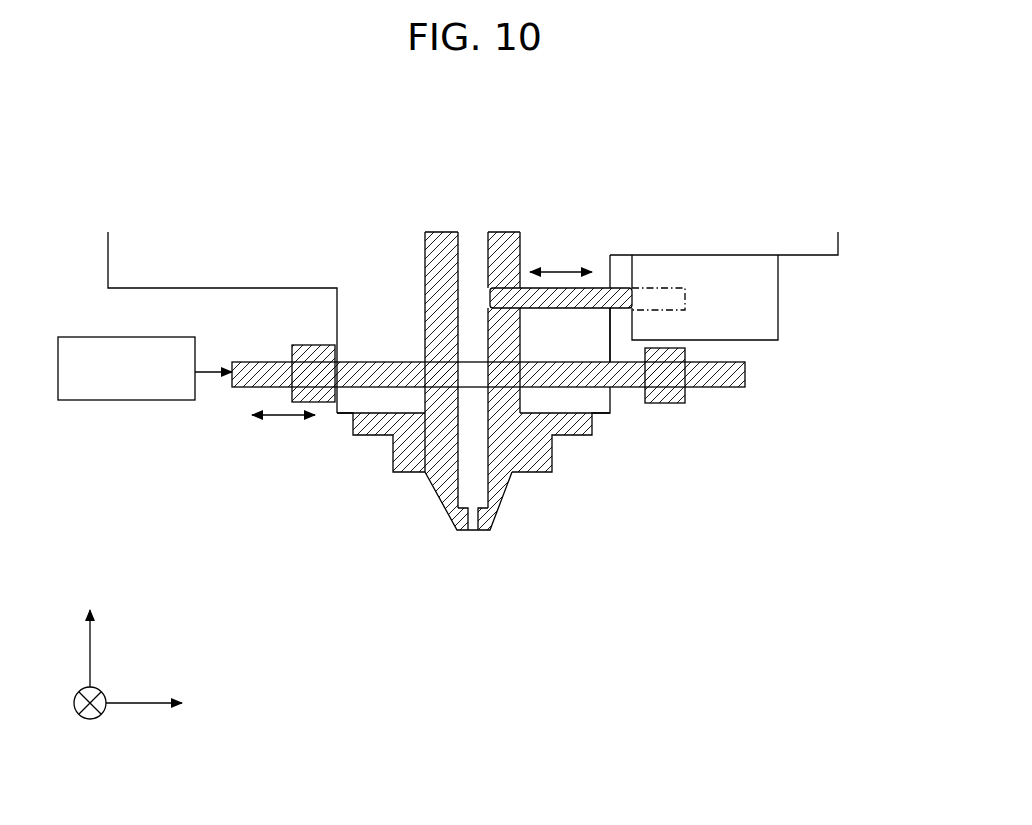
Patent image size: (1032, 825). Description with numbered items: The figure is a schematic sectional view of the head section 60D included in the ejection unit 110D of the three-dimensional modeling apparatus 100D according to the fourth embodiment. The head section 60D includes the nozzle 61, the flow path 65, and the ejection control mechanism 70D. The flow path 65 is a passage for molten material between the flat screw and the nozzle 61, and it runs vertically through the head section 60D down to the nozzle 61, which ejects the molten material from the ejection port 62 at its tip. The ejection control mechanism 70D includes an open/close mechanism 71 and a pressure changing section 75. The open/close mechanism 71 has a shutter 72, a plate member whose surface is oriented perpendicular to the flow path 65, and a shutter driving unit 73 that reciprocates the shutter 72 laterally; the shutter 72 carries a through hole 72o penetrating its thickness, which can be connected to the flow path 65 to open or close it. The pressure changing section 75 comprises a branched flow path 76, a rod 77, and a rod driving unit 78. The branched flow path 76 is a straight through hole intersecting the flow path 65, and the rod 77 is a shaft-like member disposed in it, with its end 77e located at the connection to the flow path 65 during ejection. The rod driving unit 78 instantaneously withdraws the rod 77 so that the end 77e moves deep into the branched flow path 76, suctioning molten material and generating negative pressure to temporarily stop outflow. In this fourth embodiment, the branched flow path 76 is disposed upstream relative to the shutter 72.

The three-dimensional modeling apparatus 100D is at (107, 144).
The ejection unit 110D is at (190, 144).
The head section 60D is at (503, 397).
The nozzle 61 is at (443, 487).
The ejection port 62 is at (470, 531).
The flow path 65 is at (470, 258).
The ejection control mechanism 70D is at (485, 401).
The open/close mechanism 71 is at (228, 483).
The shutter 72 is at (250, 389).
The through hole 72o is at (473, 388).
The shutter driving unit 73 is at (138, 401).
The pressure changing section 75 is at (757, 353).
The branched flow path 76 is at (618, 300).
The rod 77 is at (580, 306).
The end of rod 77e is at (490, 305).
The rod driving unit 78 is at (778, 294).